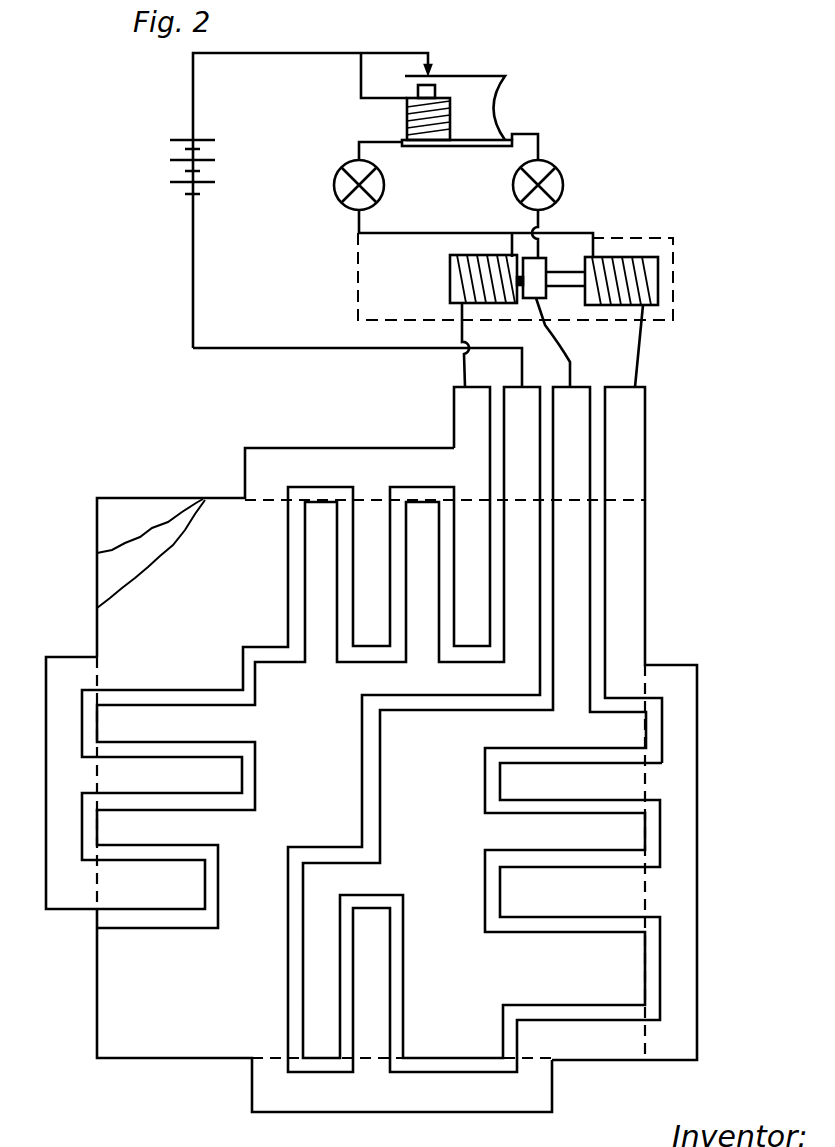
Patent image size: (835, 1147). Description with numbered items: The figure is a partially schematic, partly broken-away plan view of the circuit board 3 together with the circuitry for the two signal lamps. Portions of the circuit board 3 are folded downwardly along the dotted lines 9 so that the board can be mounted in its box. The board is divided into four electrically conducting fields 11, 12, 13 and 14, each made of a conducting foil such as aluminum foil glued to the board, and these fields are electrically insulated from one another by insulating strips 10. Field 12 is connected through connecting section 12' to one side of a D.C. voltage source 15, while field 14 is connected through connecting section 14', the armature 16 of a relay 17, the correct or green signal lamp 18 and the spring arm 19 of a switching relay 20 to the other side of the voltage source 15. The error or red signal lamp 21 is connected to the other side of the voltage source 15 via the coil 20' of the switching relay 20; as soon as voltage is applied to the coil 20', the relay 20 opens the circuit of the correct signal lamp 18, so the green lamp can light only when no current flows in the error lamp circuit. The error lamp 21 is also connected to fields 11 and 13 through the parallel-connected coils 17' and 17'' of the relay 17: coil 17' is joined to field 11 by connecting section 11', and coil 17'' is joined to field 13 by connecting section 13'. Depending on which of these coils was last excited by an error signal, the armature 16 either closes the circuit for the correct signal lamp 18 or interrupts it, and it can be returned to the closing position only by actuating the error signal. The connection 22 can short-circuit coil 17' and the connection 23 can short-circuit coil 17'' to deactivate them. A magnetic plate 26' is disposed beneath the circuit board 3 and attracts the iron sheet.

The circuit board 3 is at (268, 689).
The dotted lines 9 is at (97, 1006).
The insulating strips 10 is at (655, 723).
The electrically conducting field 11 is at (268, 678).
The connecting section 11' is at (450, 443).
The electrically conducting field 12 is at (379, 786).
The connecting section 12' is at (476, 437).
The electrically conducting field 13 is at (649, 780).
The connecting section 13' is at (656, 443).
The electrically conducting field 14 is at (474, 779).
The connecting section 14' is at (627, 443).
The D.C. voltage source 15 is at (166, 185).
The armature 16 is at (546, 268).
The relay 17 is at (582, 309).
The coil 17' is at (455, 279).
The coil 17'' is at (661, 281).
The correct signal lamp 18 is at (558, 186).
The spring arm 19 is at (477, 75).
The switching relay 20 is at (394, 119).
The coil 20' is at (442, 135).
The error signal lamp 21 is at (334, 185).
The connection 22 is at (357, 288).
The connection 23 is at (675, 241).
The magnetic plate 26' is at (131, 516).